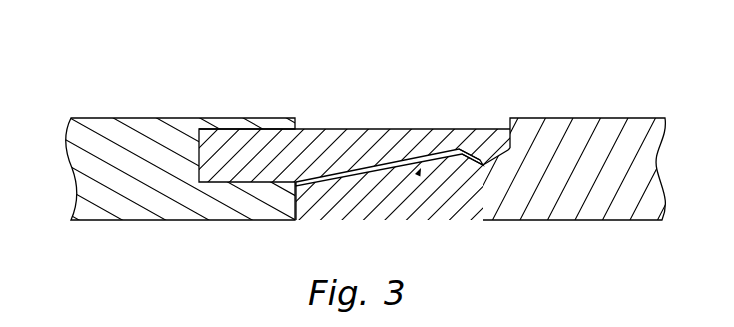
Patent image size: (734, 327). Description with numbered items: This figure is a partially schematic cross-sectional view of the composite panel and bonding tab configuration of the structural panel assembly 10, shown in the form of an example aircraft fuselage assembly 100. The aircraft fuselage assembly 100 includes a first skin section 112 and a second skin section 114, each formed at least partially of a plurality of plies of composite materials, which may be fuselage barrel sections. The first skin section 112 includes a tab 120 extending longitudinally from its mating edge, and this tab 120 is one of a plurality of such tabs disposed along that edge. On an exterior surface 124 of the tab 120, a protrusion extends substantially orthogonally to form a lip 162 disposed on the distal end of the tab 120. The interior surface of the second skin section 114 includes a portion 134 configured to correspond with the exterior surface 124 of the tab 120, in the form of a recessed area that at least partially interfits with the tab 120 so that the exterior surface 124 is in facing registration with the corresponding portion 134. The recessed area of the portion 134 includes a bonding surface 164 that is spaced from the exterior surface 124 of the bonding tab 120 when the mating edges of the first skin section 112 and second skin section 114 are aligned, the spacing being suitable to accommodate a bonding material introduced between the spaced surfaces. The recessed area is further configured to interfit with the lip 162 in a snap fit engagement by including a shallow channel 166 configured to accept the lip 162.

The structural panel assembly 10 is at (82, 33).
The aircraft fuselage assembly 100 is at (117, 78).
The first skin section 112 is at (153, 117).
The second skin section 114 is at (588, 118).
The tab 120 is at (335, 128).
The exterior surface 124 is at (343, 177).
The portion 134 is at (421, 168).
The lip 162 is at (462, 162).
The bonding surface 164 is at (389, 160).
The shallow channel 166 is at (473, 164).